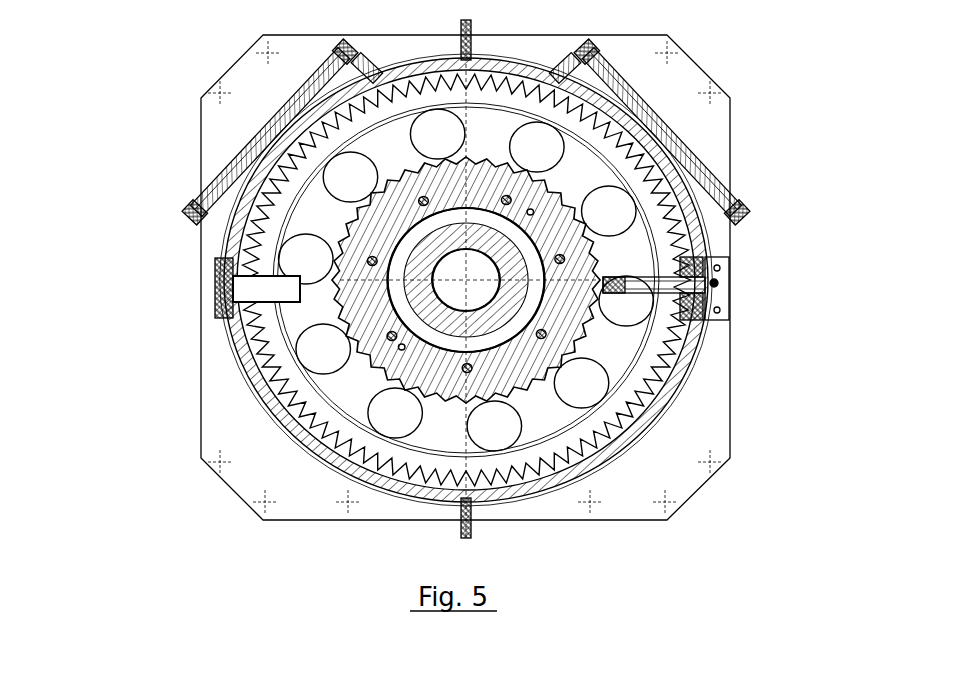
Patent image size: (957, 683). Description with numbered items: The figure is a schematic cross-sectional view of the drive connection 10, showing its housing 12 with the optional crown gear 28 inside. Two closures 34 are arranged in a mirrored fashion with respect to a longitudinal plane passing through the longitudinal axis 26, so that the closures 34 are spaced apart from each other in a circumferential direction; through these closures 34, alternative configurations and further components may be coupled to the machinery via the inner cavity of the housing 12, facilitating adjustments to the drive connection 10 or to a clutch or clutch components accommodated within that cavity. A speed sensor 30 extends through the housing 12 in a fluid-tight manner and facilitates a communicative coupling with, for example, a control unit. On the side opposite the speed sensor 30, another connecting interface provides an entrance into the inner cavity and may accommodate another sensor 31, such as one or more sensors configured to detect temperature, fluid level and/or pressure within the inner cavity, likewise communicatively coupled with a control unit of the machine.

The drive connection 10 is at (124, 72).
The housing 12 is at (198, 148).
The longitudinal axis 26 is at (478, 279).
The crown gear 28 is at (614, 351).
The speed sensor 30 is at (746, 286).
The sensor 31 is at (230, 279).
The closure 34 is at (274, 106).